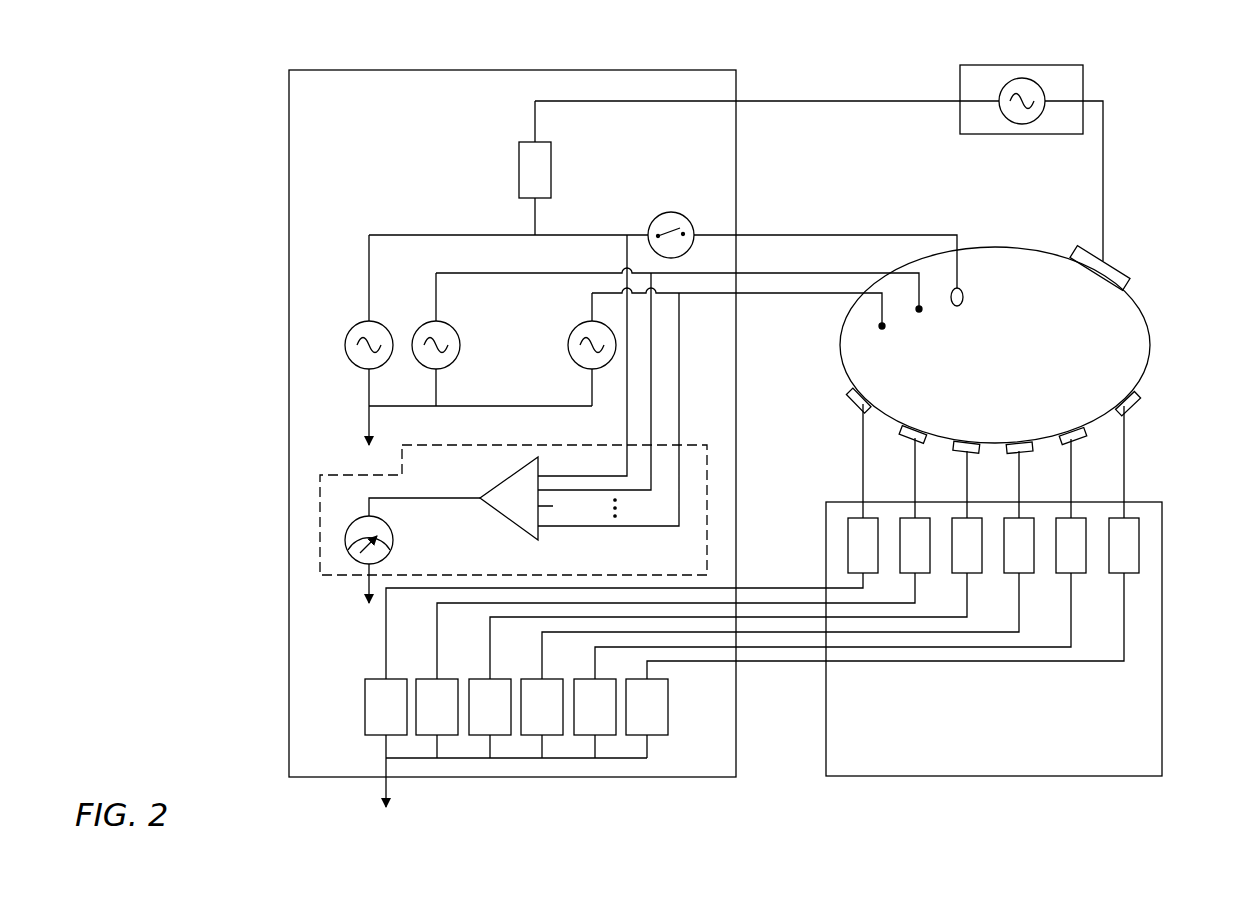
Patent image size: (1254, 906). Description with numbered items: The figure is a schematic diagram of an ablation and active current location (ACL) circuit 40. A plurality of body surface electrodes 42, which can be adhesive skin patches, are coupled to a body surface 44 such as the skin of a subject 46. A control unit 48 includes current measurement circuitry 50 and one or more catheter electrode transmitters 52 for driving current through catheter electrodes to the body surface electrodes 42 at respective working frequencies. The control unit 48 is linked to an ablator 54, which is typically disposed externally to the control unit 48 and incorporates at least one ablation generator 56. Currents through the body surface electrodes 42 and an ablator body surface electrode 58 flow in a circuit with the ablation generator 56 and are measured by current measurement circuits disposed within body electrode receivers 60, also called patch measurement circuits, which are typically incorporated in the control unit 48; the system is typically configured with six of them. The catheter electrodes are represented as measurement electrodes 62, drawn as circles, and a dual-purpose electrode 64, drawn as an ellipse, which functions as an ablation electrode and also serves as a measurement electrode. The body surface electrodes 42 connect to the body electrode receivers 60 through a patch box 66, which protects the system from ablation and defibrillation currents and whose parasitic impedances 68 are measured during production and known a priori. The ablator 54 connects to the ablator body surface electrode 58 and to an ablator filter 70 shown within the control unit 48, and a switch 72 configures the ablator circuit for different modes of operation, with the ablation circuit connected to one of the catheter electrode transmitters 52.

The ablation and active current location (ACL) circuit 40 is at (240, 111).
The body surface electrodes 42 is at (855, 402).
The body surface 44 is at (1150, 358).
The subject 46 is at (1010, 247).
The control unit 48 is at (289, 708).
The current measurement circuitry 50 is at (320, 530).
The catheter electrode transmitters 52 is at (380, 322).
The ablator 54 is at (1083, 70).
The ablation generator 56 is at (1022, 124).
The ablator body surface electrode 58 is at (1128, 282).
The body electrode receivers 60 is at (516, 707).
The measurement electrodes 62 is at (919, 312).
The dual-purpose electrode 64 is at (957, 306).
The patch box 66 is at (1162, 697).
The patch box parasitic impedances 68 is at (848, 542).
The ablator filter 70 is at (519, 168).
The switch 72 is at (672, 212).